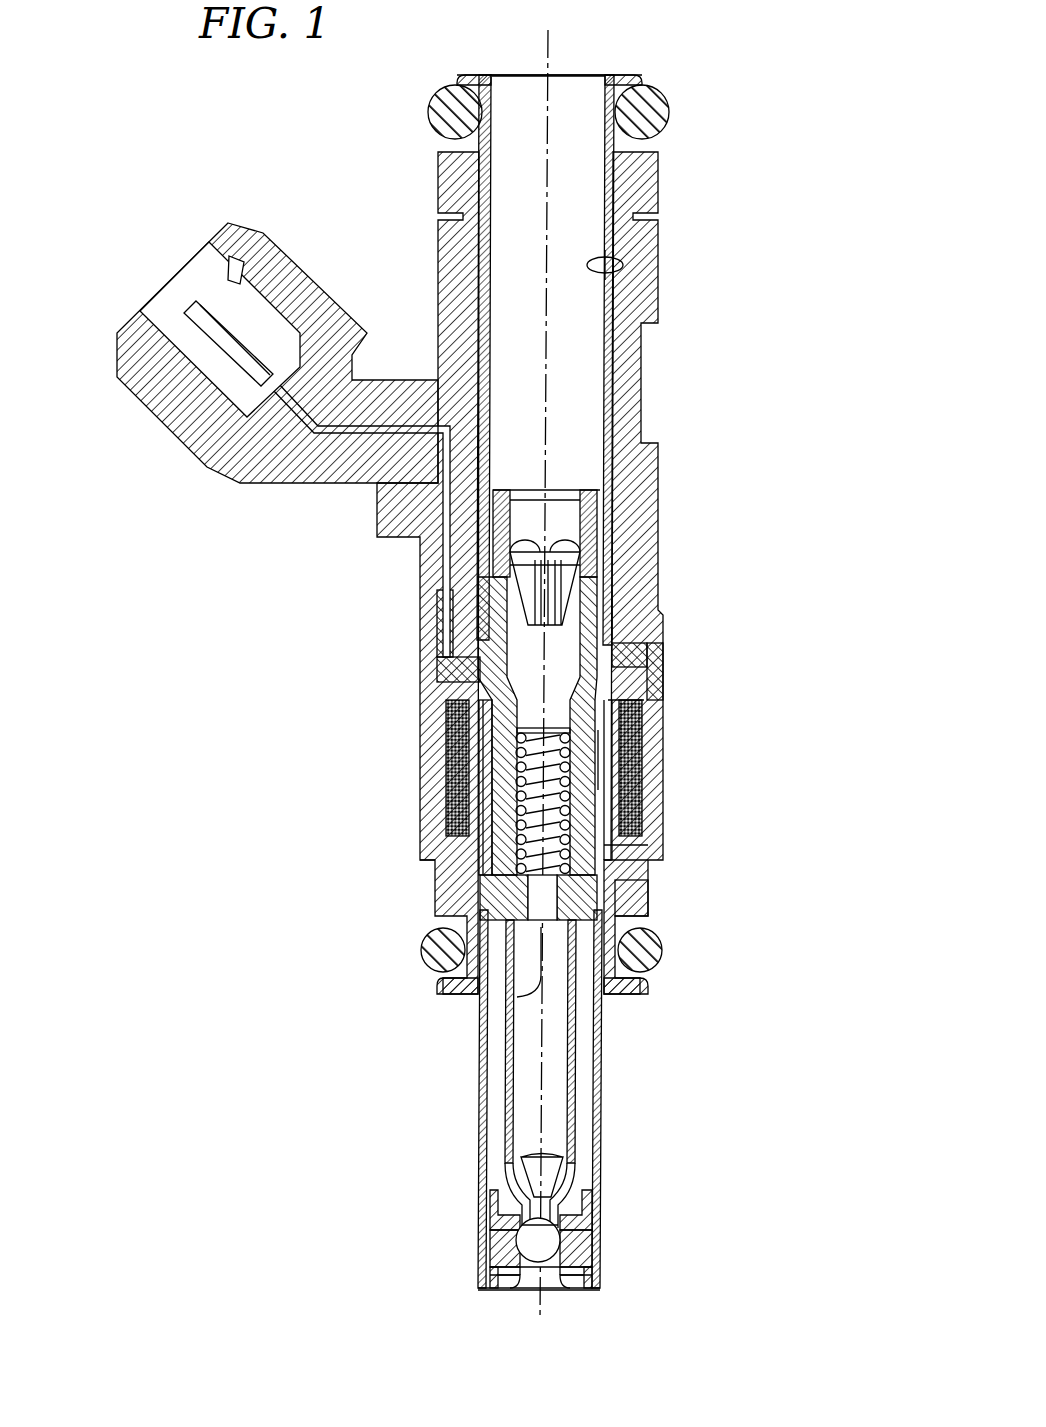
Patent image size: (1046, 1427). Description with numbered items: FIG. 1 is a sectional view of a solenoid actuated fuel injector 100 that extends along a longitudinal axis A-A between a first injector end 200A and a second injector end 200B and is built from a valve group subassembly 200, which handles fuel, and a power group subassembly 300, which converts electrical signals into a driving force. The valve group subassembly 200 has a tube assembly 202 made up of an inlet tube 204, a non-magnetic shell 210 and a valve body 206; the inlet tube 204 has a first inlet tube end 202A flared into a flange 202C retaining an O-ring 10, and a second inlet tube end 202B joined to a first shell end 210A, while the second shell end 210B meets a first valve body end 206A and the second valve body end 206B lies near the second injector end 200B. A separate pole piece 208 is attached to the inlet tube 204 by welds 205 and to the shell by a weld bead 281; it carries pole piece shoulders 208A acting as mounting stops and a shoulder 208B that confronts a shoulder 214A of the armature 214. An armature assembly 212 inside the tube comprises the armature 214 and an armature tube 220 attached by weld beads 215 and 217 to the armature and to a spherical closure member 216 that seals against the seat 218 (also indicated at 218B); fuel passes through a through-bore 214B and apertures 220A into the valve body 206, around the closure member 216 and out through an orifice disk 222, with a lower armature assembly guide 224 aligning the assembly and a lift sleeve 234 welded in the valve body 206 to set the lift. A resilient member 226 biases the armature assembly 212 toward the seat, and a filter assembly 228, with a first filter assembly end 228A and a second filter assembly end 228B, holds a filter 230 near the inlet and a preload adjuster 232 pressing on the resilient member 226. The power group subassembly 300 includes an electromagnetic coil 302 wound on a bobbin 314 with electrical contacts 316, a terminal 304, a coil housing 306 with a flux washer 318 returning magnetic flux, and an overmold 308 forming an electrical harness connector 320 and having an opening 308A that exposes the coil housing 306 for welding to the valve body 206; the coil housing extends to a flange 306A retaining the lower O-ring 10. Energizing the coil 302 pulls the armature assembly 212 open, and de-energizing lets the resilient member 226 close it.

The fuel injector 100 is at (840, 93).
The O-ring 10 is at (669, 120).
The valve group subassembly 200 is at (604, 1125).
The first injector end 200A is at (594, 66).
The second injector end 200B is at (522, 1290).
The tube assembly 202 is at (578, 355).
The first inlet tube end 202A is at (500, 74).
The second inlet tube end 202B is at (613, 600).
The flange 202C is at (642, 78).
The inlet tube 204 is at (590, 262).
The welds 205 is at (642, 618).
The valve body 206 is at (602, 1042).
The first valve body end 206A is at (642, 905).
The second valve body end 206B is at (586, 1214).
The pole piece 208 is at (630, 648).
The pole piece shoulders 208A is at (612, 700).
The shoulder of pole piece 208B is at (624, 786).
The non-magnetic shell 210 is at (488, 775).
The first shell end 210A is at (606, 730).
The second shell end 210B is at (612, 856).
The armature assembly 212 is at (494, 1100).
The armature 214 is at (490, 885).
The shoulder of armature 214A is at (606, 842).
The through-bore 214B is at (530, 995).
The weld bead 215 is at (506, 905).
The closure member 216 is at (556, 1232).
The weld bead 217 is at (500, 1236).
The seat 218 is at (590, 1262).
The seat bottom 218B is at (506, 1262).
The armature tube 220 is at (576, 1086).
The apertures 220A is at (538, 1170).
The orifice disk 222 is at (562, 1288).
The lower armature assembly guide 224 is at (578, 1234).
The resilient member 226 is at (524, 856).
The filter assembly 228 is at (598, 548).
The first filter assembly end 228A is at (580, 470).
The second filter assembly end 228B is at (532, 720).
The filter 230 is at (560, 580).
The preload adjuster 232 is at (490, 590).
The lift sleeve 234 is at (498, 1208).
The weld bead 281 is at (606, 756).
The power group subassembly 300 is at (430, 790).
The electromagnetic coil 302 is at (452, 735).
The terminal 304 is at (188, 330).
The coil housing 306 is at (428, 857).
The flange 306A is at (452, 985).
The overmold 308 is at (650, 240).
The opening 308A is at (637, 956).
The bobbin 314 is at (455, 660).
The electrical contacts 316 is at (434, 600).
The flux washer 318 is at (448, 648).
The electrical harness connector 320 is at (237, 278).